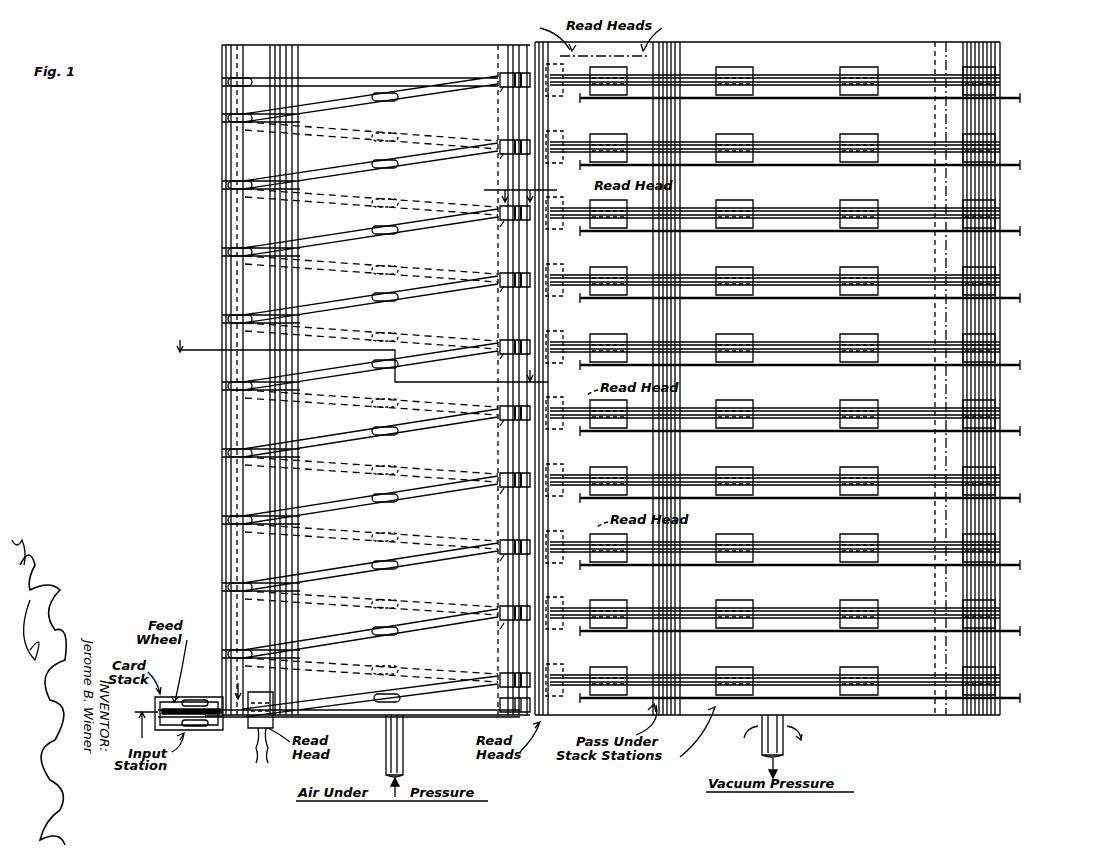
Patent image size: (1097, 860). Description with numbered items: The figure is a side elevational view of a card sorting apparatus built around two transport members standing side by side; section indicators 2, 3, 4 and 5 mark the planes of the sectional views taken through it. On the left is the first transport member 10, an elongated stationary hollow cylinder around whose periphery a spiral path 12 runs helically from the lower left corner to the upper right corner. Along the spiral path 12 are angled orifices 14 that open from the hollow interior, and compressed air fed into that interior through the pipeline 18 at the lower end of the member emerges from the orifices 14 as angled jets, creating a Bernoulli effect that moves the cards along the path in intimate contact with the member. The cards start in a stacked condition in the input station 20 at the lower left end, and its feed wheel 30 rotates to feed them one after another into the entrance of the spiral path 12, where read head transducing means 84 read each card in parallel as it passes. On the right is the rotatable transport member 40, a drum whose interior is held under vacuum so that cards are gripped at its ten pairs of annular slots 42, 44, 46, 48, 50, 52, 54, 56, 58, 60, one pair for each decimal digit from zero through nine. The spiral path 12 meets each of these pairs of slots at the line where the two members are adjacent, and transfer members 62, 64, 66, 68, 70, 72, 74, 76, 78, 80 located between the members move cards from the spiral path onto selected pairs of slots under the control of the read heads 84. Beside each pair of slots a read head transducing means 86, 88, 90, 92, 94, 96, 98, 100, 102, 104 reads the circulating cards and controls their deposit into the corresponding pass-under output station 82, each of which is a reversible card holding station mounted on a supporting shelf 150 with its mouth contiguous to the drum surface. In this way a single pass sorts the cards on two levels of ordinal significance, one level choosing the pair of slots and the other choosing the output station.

The section line 2- 2 is at (366, 357).
The section line 3- 3 is at (594, 185).
The section line 4- 4 is at (179, 703).
The section line 5- 5 is at (598, 37).
The first transport member 10 is at (218, 92).
The spiral path 12 is at (432, 78).
The angled orifices 14 is at (396, 104).
The pipeline 18 is at (386, 740).
The input station 20 is at (226, 734).
The feed wheel 30 is at (186, 700).
The rotatable transport member 40 is at (954, 50).
The pair of annular slots 42 is at (780, 78).
The pair of annular slots 44 is at (780, 145).
The pair of annular slots 46 is at (780, 211).
The pair of annular slots 48 is at (775, 278).
The pair of annular slots 50 is at (780, 345).
The pair of annular slots 52 is at (780, 411).
The pair of annular slots 54 is at (780, 478).
The pair of annular slots 56 is at (780, 545).
The pair of annular slots 58 is at (780, 611).
The pair of annular slots 60 is at (780, 678).
The transfer member 62 is at (504, 90).
The transfer member 64 is at (504, 157).
The transfer member 66 is at (504, 225).
The transfer member 68 is at (504, 290).
The transfer member 70 is at (504, 357).
The transfer member 72 is at (504, 424).
The transfer member 74 is at (504, 492).
The transfer member 76 is at (504, 559).
The transfer member 78 is at (504, 627).
The transfer member 80 is at (490, 714).
The pass-under output station 82 is at (736, 74).
The read head transducing means 84 is at (256, 732).
The read head transducing means 86 is at (553, 98).
The read head transducing means 88 is at (553, 165).
The read head transducing means 90 is at (553, 231).
The read head transducing means 92 is at (553, 297).
The read head transducing means 94 is at (560, 332).
The read head transducing means 96 is at (562, 399).
The read head transducing means 98 is at (551, 466).
The read head transducing means 100 is at (558, 532).
The read head transducing means 102 is at (562, 599).
The read head transducing means 104 is at (562, 666).
The supporting shelf 150 is at (1018, 98).